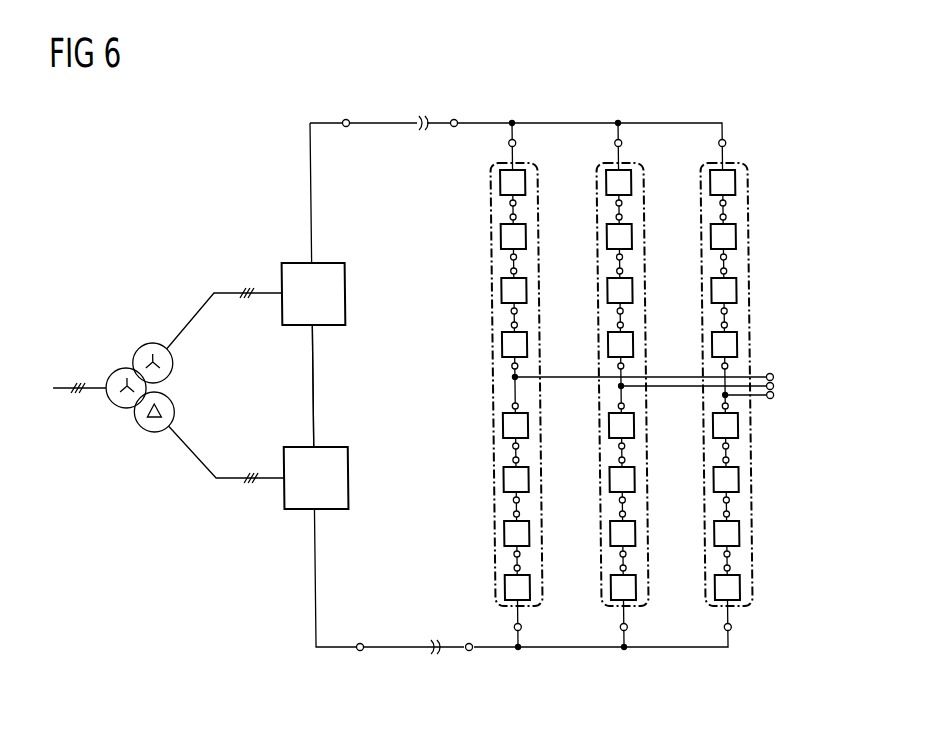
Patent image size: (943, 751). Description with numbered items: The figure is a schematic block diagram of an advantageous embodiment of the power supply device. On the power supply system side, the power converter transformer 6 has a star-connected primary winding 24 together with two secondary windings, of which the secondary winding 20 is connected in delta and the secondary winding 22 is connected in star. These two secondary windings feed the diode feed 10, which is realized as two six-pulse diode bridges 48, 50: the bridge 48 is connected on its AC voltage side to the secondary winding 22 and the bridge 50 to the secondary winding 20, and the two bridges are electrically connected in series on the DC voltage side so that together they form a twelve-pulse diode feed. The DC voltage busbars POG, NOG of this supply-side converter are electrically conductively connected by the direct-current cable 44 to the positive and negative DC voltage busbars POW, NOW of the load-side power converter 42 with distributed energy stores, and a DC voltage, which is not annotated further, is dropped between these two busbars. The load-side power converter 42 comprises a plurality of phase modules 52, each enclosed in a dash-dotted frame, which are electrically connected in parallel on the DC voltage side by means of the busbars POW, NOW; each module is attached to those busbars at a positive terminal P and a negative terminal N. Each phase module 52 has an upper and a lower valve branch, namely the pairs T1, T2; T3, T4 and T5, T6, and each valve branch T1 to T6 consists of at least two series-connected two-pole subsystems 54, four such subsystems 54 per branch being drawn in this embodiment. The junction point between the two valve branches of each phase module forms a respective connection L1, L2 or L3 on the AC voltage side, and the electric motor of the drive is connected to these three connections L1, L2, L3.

The power converter transformer 6 is at (113, 390).
The secondary winding 20 is at (152, 432).
The secondary winding 22 is at (148, 342).
The primary winding 24 is at (111, 408).
The 6-pulse diode bridge 48 is at (345, 293).
The 6-pulse diode bridge 50 is at (347, 478).
The diode feed 10 is at (334, 388).
The direct-current cable 44 is at (400, 118).
The load-side power converter 42 is at (616, 350).
The phase module 52 is at (498, 178).
The two-pole subsystem 54 is at (586, 387).
The valve branch T1 is at (538, 262).
The valve branch T2 is at (538, 504).
The valve branch T3 is at (644, 262).
The valve branch T4 is at (644, 504).
The valve branch T5 is at (748, 262).
The valve branch T6 is at (748, 504).
The connection on the AC voltage side L1 is at (771, 376).
The connection on the AC voltage side L2 is at (771, 386).
The connection on the AC voltage side L3 is at (771, 396).
The positive terminal P is at (508, 143).
The negative terminal N is at (508, 627).
The positive DC voltage busbar POG is at (346, 118).
The positive DC voltage busbar POW is at (454, 118).
The negative DC voltage busbar NOG is at (354, 652).
The negative DC voltage busbar NOW is at (463, 652).